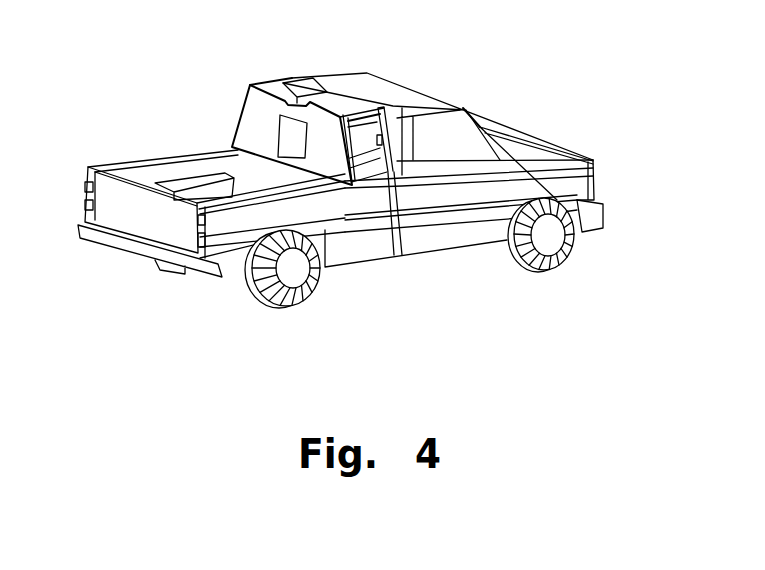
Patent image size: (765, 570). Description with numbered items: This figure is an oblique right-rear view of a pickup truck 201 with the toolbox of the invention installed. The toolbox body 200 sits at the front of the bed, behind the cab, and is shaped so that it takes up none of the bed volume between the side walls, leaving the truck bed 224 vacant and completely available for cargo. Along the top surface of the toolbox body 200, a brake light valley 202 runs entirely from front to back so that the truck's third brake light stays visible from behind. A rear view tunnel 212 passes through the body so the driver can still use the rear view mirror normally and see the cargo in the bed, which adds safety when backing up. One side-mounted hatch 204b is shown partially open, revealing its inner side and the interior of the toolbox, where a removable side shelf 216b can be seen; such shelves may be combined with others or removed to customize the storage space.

The toolbox body 200 is at (257, 110).
The pickup truck 201 is at (523, 148).
The brake light valley 202 is at (283, 83).
The side-mounted hatch 204b is at (379, 108).
The rear view tunnel 212 is at (293, 137).
The side shelf 216b is at (362, 150).
The truck bed 224 is at (192, 197).